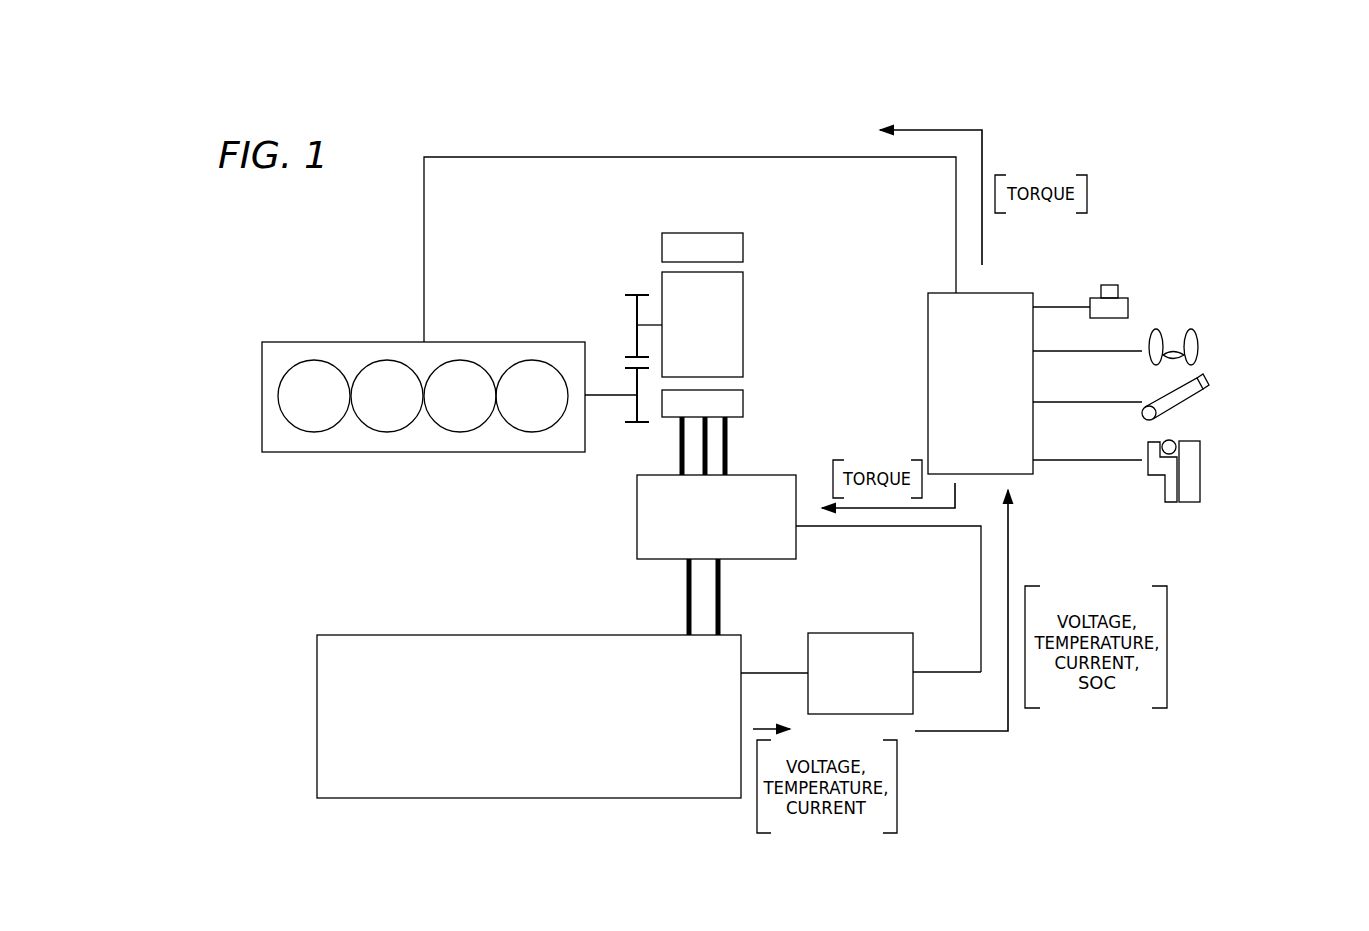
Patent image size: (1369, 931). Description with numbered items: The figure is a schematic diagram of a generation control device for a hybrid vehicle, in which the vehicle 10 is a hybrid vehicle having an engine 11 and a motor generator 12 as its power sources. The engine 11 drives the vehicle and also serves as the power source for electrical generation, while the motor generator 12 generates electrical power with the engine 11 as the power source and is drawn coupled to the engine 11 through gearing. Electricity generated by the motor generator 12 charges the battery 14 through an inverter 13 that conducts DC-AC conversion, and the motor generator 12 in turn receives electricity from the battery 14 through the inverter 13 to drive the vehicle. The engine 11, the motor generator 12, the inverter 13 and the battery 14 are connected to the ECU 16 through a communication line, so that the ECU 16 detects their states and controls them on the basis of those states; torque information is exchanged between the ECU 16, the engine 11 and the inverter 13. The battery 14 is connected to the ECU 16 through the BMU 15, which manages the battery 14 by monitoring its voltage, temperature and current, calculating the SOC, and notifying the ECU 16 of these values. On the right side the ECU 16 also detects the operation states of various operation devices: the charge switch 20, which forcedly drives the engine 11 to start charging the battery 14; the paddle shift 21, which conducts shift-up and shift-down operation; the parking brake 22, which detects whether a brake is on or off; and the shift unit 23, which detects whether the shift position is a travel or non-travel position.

The vehicle 10 is at (1043, 125).
The engine 11 is at (284, 352).
The motor generator 12 is at (755, 309).
The inverter 13 is at (650, 516).
The battery 14 is at (385, 655).
The BMU (battery management unit) 15 is at (858, 645).
The ECU (electronics control unit) 16 is at (940, 352).
The charge switch 20 is at (1120, 280).
The paddle shift 21 is at (1177, 324).
The parking brake 22 is at (1207, 408).
The shift unit 23 is at (1177, 515).